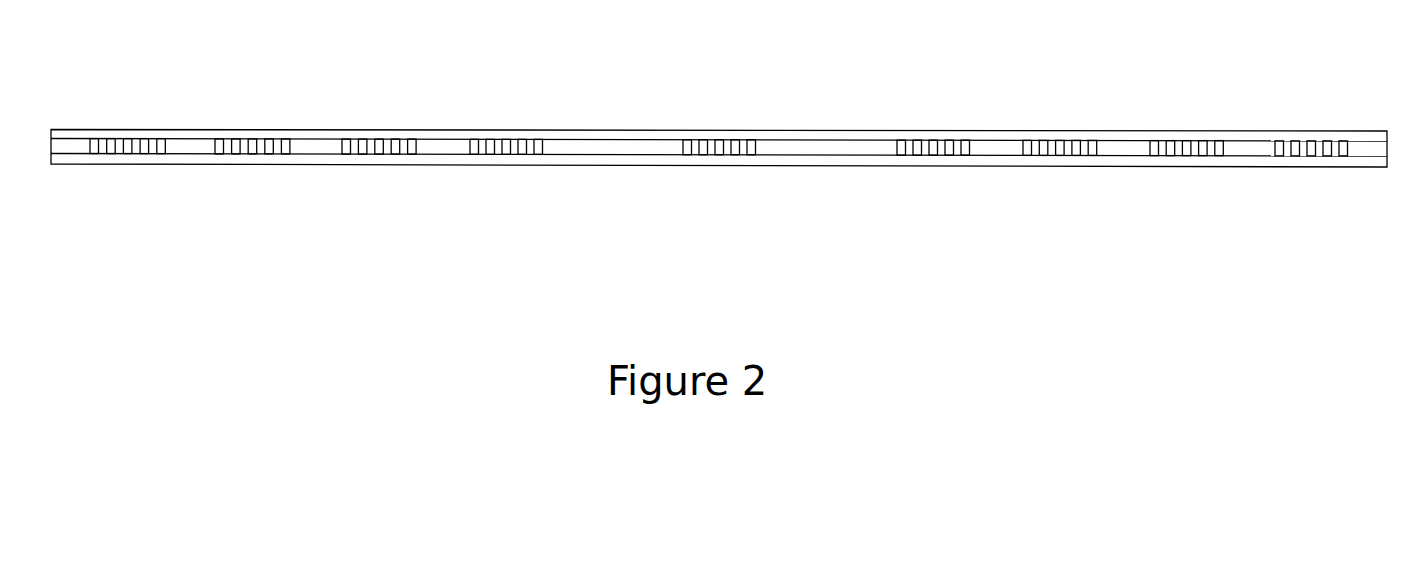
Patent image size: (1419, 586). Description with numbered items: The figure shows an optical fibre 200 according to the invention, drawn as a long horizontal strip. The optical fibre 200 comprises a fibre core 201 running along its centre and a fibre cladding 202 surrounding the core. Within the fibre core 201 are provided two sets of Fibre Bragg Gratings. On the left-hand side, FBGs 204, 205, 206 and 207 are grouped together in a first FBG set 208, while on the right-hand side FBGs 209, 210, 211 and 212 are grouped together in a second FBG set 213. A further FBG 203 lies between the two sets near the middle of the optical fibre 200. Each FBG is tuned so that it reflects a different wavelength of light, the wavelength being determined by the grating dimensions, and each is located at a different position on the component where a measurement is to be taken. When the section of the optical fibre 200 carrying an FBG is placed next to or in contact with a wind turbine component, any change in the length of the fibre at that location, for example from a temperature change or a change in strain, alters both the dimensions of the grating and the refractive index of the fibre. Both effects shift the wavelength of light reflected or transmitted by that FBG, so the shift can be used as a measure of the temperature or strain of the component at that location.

The optical fibre 200 is at (750, 190).
The fibre core 201 is at (605, 148).
The fibre cladding 202 is at (845, 137).
The Fibre Bragg Grating 203 is at (683, 123).
The Fibre Bragg Grating 204 is at (90, 123).
The Fibre Bragg Grating 205 is at (215, 123).
The Fibre Bragg Grating 206 is at (342, 123).
The Fibre Bragg Grating 207 is at (506, 116).
The FBG set 208 is at (315, 155).
The Fibre Bragg Grating 209 is at (897, 123).
The Fibre Bragg Grating 210 is at (1023, 123).
The Fibre Bragg Grating 211 is at (1150, 125).
The Fibre Bragg Grating 212 is at (1311, 119).
The FBG set 213 is at (1120, 155).